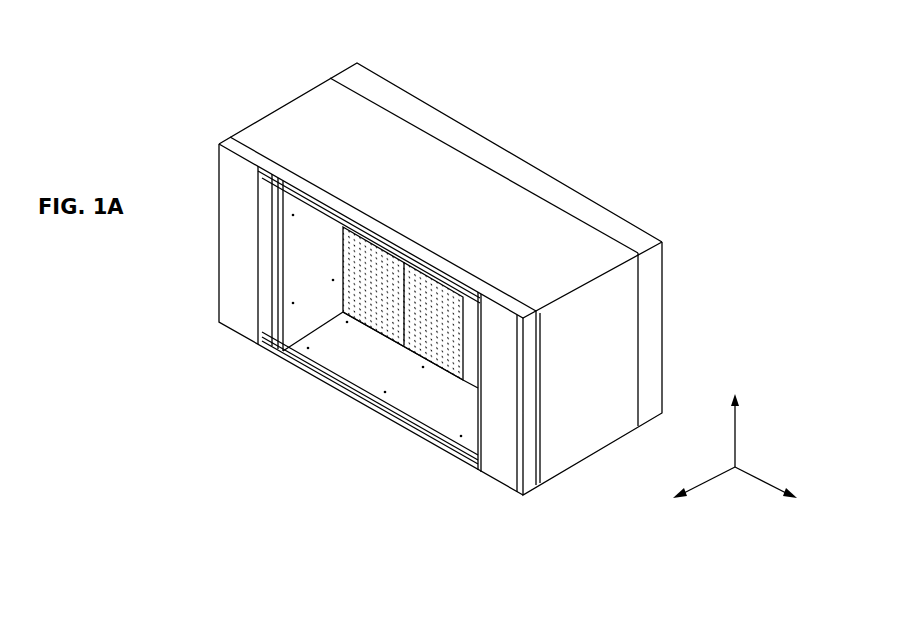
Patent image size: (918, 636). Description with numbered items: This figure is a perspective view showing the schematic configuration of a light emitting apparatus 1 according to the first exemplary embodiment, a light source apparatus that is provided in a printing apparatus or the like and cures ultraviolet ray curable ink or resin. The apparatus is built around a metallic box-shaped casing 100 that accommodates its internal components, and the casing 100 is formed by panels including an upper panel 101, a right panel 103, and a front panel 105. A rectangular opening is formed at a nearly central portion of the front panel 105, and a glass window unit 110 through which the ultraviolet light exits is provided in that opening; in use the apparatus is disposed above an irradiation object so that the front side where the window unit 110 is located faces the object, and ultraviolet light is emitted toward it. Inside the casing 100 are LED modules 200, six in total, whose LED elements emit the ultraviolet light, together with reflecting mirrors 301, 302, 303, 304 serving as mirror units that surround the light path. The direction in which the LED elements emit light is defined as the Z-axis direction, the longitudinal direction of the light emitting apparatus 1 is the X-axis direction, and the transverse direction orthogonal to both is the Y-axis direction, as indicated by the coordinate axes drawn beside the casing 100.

The light emitting apparatus 1 is at (648, 63).
The casing 100 is at (608, 217).
The upper panel 101 is at (525, 217).
The right panel 103 is at (602, 355).
The front panel 105 is at (241, 317).
The window unit 110 is at (432, 443).
The LED module 200 is at (403, 343).
The reflecting mirror 301 is at (313, 222).
The reflecting mirror 302 is at (413, 397).
The reflecting mirror 303 is at (458, 388).
The reflecting mirror 304 is at (292, 271).